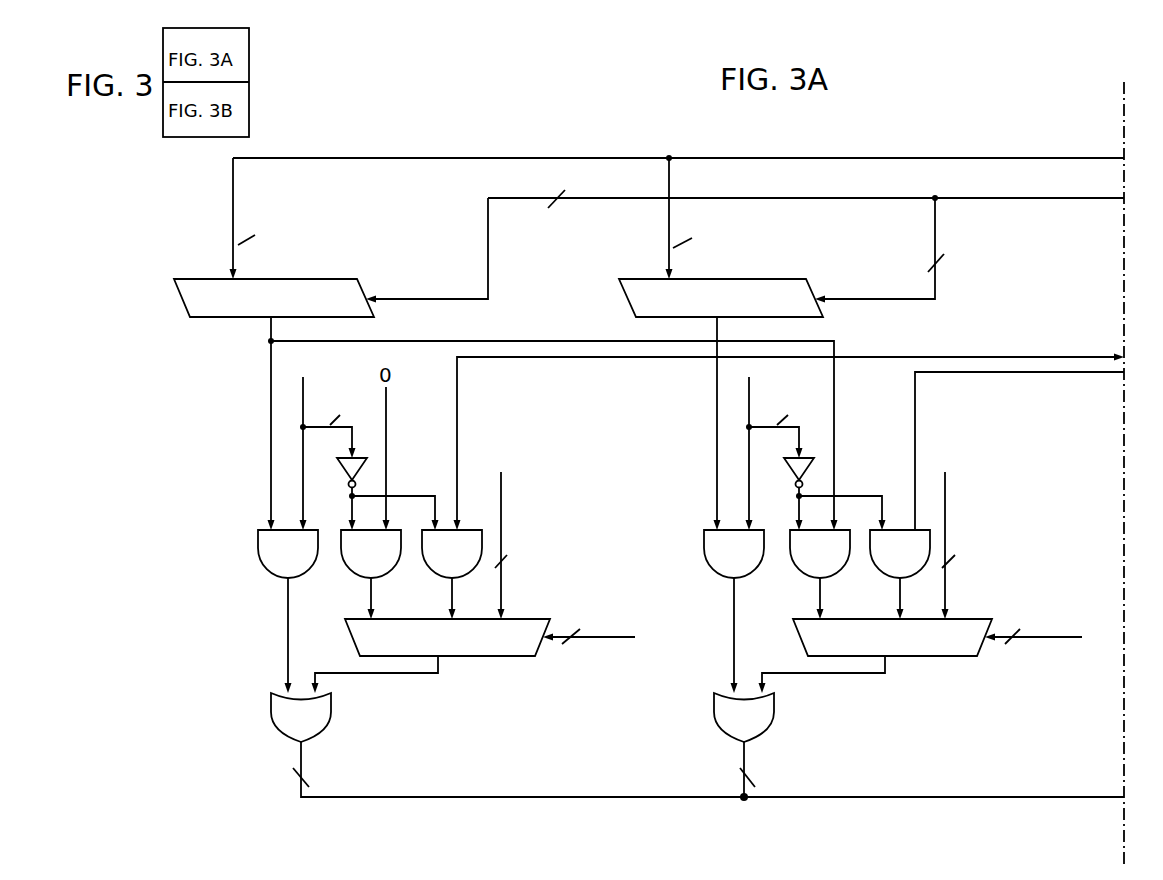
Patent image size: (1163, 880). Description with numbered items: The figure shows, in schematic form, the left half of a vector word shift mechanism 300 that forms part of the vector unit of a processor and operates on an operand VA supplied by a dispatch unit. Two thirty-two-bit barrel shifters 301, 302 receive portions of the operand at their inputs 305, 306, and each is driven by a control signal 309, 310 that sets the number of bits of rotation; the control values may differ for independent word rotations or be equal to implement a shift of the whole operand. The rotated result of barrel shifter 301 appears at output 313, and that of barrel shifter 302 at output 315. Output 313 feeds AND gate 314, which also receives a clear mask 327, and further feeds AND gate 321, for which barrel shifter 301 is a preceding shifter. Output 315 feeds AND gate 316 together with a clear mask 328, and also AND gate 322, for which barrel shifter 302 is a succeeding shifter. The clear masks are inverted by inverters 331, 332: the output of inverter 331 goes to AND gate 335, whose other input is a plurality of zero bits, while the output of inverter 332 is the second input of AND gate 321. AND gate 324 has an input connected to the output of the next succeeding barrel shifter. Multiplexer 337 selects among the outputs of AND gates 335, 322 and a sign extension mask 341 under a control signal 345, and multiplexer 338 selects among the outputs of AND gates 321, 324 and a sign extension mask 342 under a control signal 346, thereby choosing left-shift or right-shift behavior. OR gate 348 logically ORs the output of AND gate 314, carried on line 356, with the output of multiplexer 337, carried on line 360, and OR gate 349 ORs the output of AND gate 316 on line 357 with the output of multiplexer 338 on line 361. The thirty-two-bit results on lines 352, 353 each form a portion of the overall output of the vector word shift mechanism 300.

The vector word shift mechanism 300 is at (182, 622).
The barrel shifter 301 is at (345, 268).
The barrel shifter 302 is at (790, 268).
The input 305 is at (233, 198).
The input 306 is at (668, 193).
The control signal 309 is at (488, 232).
The control signal 310 is at (958, 236).
The output 313 is at (271, 403).
The AND gate 314 is at (272, 567).
The output 315 is at (717, 403).
The AND gate 316 is at (718, 567).
The AND gate 321 is at (804, 567).
The AND gate 322 is at (436, 567).
The AND gate 324 is at (884, 567).
The clear mask 327 is at (303, 387).
The clear mask 328 is at (749, 387).
The inverter 331 is at (343, 470).
The inverter 332 is at (790, 470).
The AND gate 335 is at (355, 567).
The multiplexer 337 is at (436, 649).
The multiplexer 338 is at (877, 649).
The sign extension mask 341 is at (505, 516).
The sign extension mask 342 is at (948, 515).
The control signal 345 is at (605, 625).
The control signal 346 is at (1052, 625).
The OR gate 348 is at (285, 732).
The OR gate 349 is at (728, 732).
The 32-bit output of OR gate 348 352 is at (302, 760).
The 32-bit output of OR gate 349 353 is at (748, 760).
The output of AND gate 314 356 is at (287, 622).
The output of AND gate 316 357 is at (734, 622).
The output of multiplexer 337 360 is at (397, 675).
The output of multiplexer 338 361 is at (840, 675).